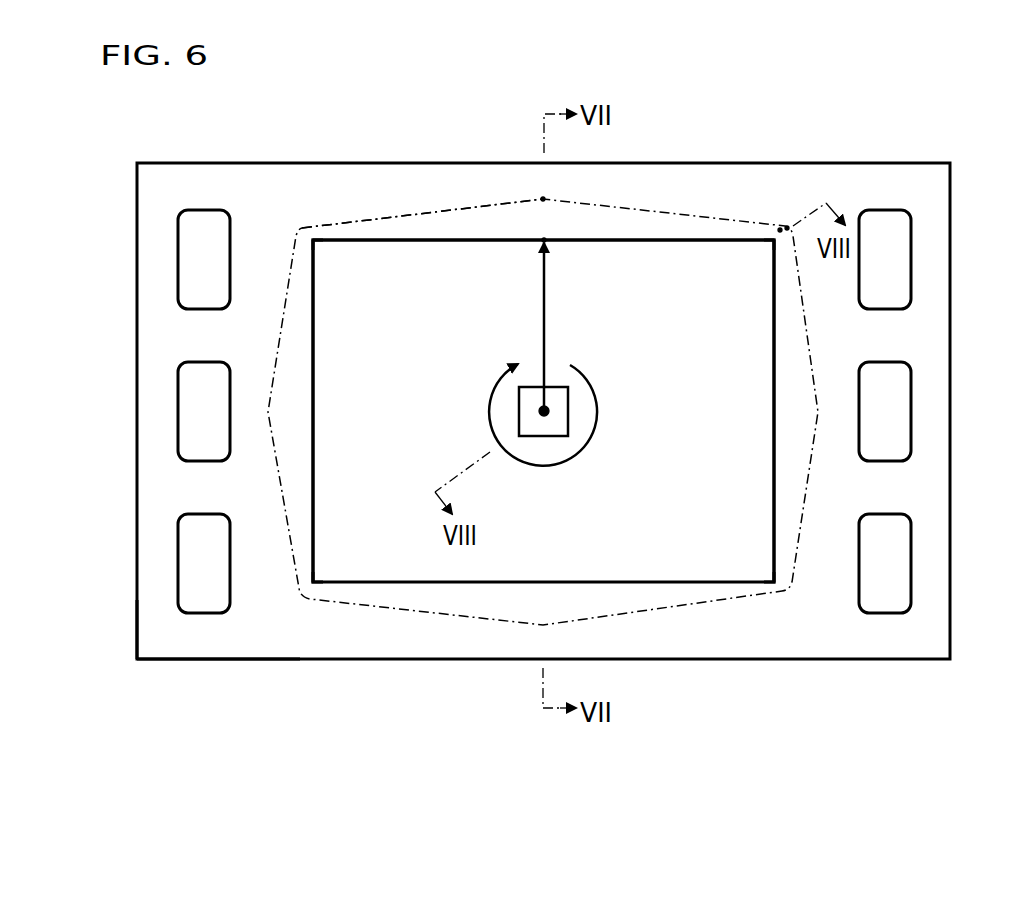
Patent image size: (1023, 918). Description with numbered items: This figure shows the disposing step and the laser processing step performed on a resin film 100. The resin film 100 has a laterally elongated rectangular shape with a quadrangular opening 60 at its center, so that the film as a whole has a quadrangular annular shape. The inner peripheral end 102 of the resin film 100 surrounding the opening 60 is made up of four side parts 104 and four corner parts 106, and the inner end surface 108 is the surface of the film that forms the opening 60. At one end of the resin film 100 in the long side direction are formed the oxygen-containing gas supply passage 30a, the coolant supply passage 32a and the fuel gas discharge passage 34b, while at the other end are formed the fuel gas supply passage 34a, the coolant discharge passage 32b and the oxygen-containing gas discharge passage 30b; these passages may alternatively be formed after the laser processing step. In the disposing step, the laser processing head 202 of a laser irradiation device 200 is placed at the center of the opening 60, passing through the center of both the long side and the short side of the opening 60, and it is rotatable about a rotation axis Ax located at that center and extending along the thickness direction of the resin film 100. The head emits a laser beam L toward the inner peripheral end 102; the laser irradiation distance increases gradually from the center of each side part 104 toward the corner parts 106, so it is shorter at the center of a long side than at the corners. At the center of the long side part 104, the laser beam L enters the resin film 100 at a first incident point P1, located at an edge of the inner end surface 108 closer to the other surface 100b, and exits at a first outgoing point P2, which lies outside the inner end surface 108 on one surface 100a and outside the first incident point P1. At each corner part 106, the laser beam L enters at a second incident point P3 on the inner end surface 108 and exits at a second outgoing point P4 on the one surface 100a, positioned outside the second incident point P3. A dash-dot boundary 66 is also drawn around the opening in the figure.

The resin film 100 is at (346, 69).
The one surface of the resin film 100a is at (203, 641).
The other surface of the resin film 100b is at (176, 645).
The inner peripheral end 102 is at (434, 198).
The side part 104 is at (633, 243).
The corner part 106 is at (317, 244).
The inner end surface 108 is at (442, 241).
The opening 60 is at (500, 265).
The solder resist opening boundary 66 is at (688, 212).
The laser irradiation device 200 is at (575, 383).
The laser processing head 202 is at (518, 402).
The oxygen-containing gas supply passage 30a is at (894, 260).
The oxygen-containing gas discharge passage 30b is at (193, 575).
The coolant supply passage 32a is at (894, 412).
The coolant discharge passage 32b is at (195, 408).
The fuel gas supply passage 34a is at (194, 255).
The fuel gas discharge passage 34b is at (894, 575).
The rotation axis Ax is at (549, 411).
The laser beam L is at (541, 312).
The first incident point P1 is at (544, 240).
The first outgoing point P2 is at (543, 199).
The second incident point P3 is at (788, 234).
The second outgoing point P4 is at (792, 252).